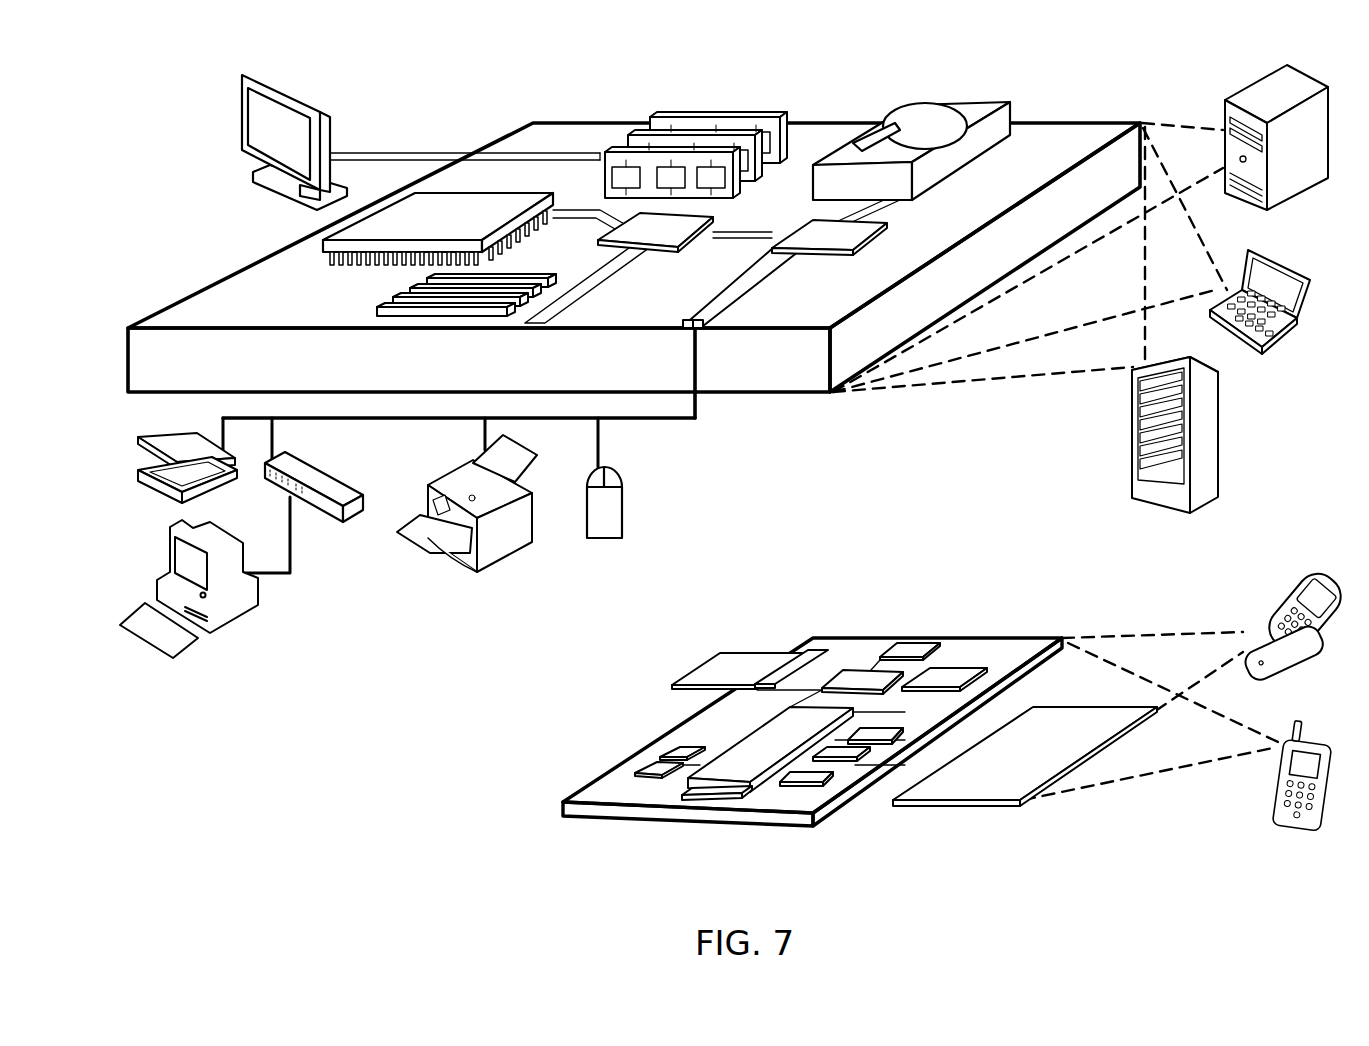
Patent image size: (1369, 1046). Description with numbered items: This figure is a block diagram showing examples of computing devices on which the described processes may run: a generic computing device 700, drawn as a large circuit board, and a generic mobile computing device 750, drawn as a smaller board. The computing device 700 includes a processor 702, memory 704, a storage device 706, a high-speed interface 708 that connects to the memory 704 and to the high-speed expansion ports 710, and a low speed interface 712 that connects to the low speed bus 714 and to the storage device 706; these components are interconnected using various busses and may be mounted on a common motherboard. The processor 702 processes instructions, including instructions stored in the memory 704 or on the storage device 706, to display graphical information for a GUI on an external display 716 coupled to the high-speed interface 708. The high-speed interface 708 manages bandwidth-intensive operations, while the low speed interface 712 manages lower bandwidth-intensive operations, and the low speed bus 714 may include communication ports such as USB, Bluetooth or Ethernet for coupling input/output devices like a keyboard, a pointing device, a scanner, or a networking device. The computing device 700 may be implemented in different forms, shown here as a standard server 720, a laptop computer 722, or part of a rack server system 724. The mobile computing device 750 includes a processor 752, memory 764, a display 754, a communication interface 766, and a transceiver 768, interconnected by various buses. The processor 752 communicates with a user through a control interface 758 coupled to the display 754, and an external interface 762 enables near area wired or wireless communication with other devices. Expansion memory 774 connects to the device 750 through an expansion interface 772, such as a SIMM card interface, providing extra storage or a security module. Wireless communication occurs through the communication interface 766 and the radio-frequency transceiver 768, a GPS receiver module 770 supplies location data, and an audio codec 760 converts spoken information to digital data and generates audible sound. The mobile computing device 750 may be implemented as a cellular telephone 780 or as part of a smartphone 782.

The computing device 700 is at (456, 96).
The processor 702 is at (322, 245).
The memory 704 is at (667, 113).
The storage device 706 is at (903, 103).
The high-speed interface 708 is at (632, 225).
The high-speed expansion ports 710 is at (395, 300).
The low speed interface 712 is at (823, 233).
The low speed bus 714 is at (706, 330).
The display 716 is at (242, 79).
The standard server 720 is at (1227, 105).
The laptop computer 722 is at (1255, 252).
The rack server system 724 is at (1130, 458).
The mobile computing device 750 is at (792, 610).
The processor 752 is at (750, 786).
The display 754 is at (1020, 802).
The control interface 758 is at (863, 768).
The audio codec 760 is at (873, 740).
The external interface 762 is at (707, 798).
The memory 764 is at (662, 767).
The communication interface 766 is at (867, 678).
The transceiver 768 is at (945, 675).
The GPS receiver module 770 is at (907, 643).
The expansion interface 772 is at (800, 650).
The expansion memory 774 is at (720, 655).
The cellular telephone 780 is at (1303, 580).
The smartphone 782 is at (1284, 722).